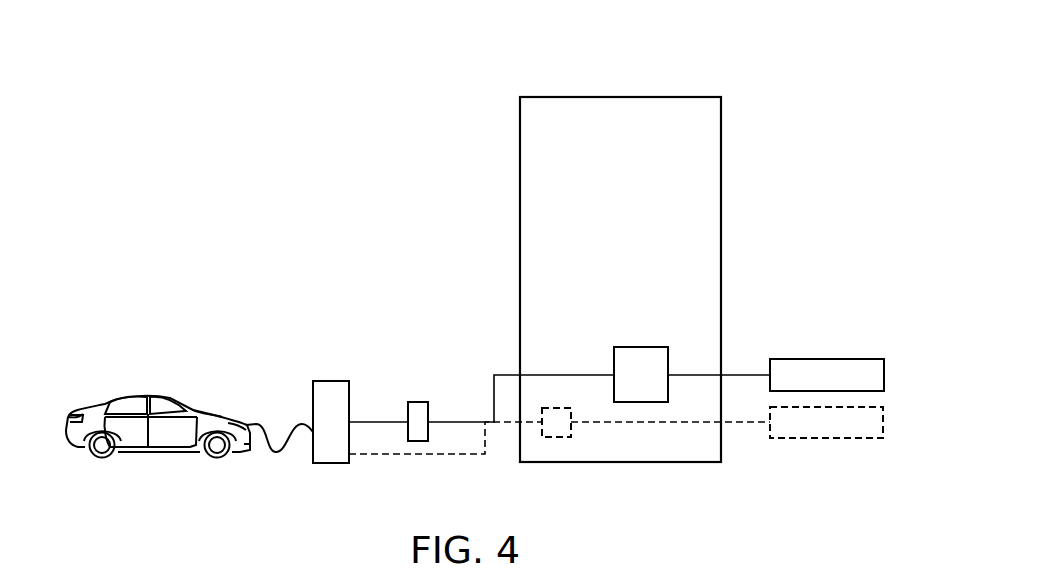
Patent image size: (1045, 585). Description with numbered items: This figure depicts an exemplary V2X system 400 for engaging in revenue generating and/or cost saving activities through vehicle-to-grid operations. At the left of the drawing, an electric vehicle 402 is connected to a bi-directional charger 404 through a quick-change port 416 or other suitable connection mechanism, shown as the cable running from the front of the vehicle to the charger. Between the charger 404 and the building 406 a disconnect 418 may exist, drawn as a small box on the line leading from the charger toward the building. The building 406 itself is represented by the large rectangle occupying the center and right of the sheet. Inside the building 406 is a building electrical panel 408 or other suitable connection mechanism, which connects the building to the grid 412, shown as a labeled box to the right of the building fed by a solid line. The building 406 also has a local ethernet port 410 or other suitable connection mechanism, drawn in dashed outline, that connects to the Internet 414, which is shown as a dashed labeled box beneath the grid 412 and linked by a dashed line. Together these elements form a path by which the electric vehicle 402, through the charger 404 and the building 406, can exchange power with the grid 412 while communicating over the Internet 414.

The V2X system 400 is at (205, 71).
The electric vehicle 402 is at (146, 379).
The bi-directional charger 404 is at (342, 369).
The building 406 is at (581, 260).
The building electrical panel 408 is at (647, 321).
The local ethernet port 410 is at (593, 474).
The grid 412 is at (894, 373).
The Internet 414 is at (894, 424).
The quick-change port 416 is at (279, 385).
The disconnect 418 is at (433, 368).